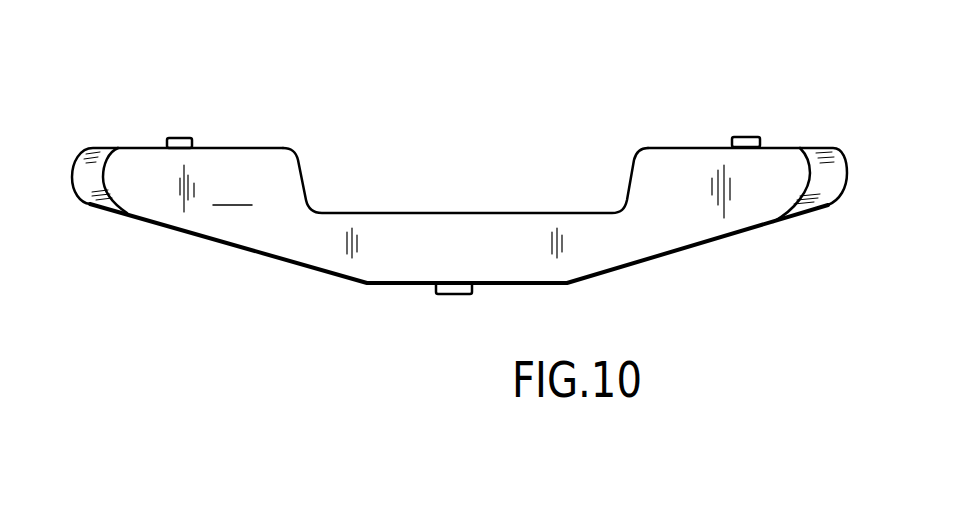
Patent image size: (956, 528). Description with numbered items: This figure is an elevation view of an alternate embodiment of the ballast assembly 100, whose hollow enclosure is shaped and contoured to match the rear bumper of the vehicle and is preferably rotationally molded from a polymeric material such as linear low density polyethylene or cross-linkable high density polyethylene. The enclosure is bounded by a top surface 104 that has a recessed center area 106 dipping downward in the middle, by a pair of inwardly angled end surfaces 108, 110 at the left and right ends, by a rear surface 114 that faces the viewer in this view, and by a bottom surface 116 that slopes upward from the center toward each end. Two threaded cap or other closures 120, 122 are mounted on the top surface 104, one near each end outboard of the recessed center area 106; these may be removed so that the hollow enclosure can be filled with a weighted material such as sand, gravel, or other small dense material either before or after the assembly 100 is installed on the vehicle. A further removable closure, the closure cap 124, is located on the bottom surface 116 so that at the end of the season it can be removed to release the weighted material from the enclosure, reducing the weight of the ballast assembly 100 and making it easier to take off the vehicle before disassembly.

The ballast assembly 100 is at (624, 131).
The top surface 104 is at (240, 148).
The recessed center area 106 is at (433, 213).
The inwardly angled end surface 108 is at (88, 196).
The inwardly angled end surface 110 is at (820, 197).
The rear surface 114 is at (216, 188).
The bottom surface 116 is at (380, 285).
The threaded cap closure 120 is at (177, 137).
The threaded cap closure 122 is at (748, 137).
The closure cap 124 is at (450, 297).